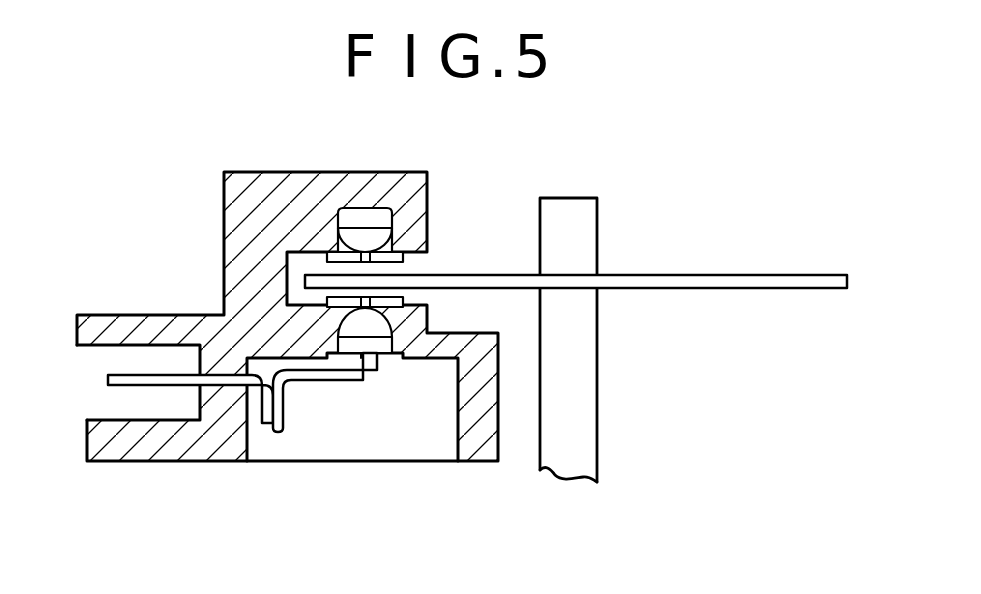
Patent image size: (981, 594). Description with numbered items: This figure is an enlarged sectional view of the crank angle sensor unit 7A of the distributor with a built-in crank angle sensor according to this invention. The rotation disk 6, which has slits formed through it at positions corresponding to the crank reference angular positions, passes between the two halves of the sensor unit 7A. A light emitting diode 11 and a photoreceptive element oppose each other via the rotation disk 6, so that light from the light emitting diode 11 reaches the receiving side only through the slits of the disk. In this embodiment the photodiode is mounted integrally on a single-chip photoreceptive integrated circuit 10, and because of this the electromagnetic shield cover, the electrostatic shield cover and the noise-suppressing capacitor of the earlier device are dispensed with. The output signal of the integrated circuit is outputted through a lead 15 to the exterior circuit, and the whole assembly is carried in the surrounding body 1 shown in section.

The frame 1 is at (140, 452).
The rotation disk 6 is at (755, 280).
The crank angle sensor unit 7A is at (103, 381).
The single-chip photoreceptive integrated circuit 10 is at (375, 322).
The light emitting diode 11 is at (380, 236).
The lead 15 is at (222, 380).